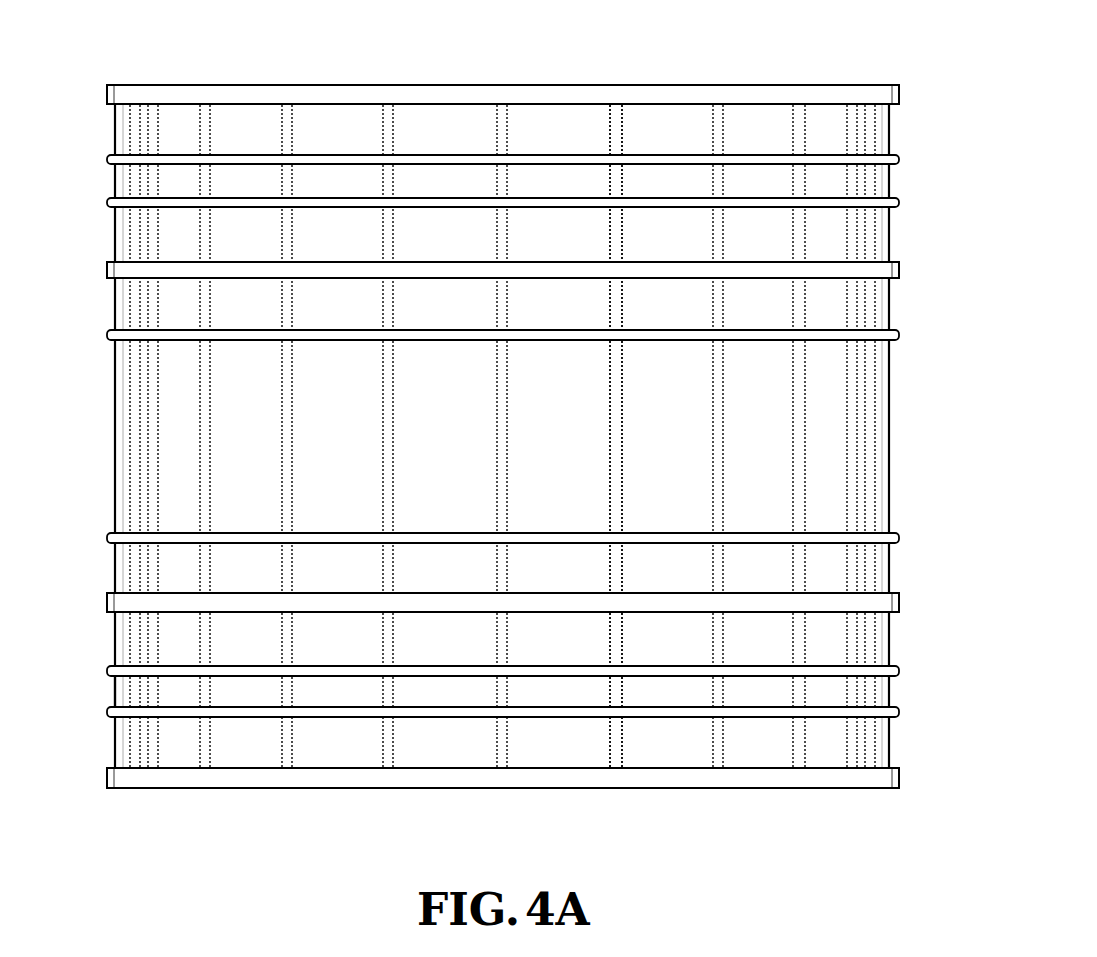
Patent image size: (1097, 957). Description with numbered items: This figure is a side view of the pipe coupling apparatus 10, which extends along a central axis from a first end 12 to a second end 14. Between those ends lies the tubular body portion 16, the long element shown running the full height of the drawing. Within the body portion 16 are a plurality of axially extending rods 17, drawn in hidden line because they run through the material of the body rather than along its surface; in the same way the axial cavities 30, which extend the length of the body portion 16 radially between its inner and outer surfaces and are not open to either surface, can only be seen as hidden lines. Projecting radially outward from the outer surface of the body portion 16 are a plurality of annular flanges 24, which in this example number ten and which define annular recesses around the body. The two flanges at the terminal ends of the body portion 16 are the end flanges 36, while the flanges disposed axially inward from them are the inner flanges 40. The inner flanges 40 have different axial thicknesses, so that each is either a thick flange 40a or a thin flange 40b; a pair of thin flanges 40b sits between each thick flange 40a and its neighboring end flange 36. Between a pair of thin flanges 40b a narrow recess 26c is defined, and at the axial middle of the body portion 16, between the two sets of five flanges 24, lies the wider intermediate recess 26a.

The pipe coupling apparatus 10 is at (500, 437).
The first end 12 is at (823, 85).
The second end 14 is at (752, 788).
The tubular body portion 16 is at (889, 390).
The axially extending rods 17 is at (502, 401).
The axial cavities 30 is at (622, 132).
The annular flanges 24 is at (107, 270).
The intermediate recess 26a is at (113, 435).
The narrow recesses 26c is at (115, 693).
The end flanges 36 is at (479, 441).
The inner flanges 40 is at (107, 159).
The thick flange 40a is at (107, 602).
The thin flange 40b is at (107, 538).